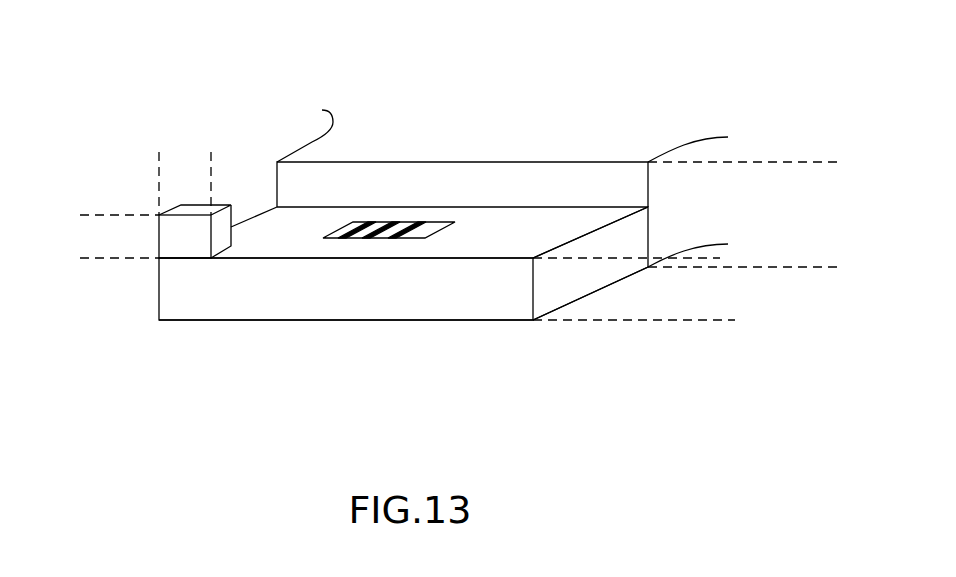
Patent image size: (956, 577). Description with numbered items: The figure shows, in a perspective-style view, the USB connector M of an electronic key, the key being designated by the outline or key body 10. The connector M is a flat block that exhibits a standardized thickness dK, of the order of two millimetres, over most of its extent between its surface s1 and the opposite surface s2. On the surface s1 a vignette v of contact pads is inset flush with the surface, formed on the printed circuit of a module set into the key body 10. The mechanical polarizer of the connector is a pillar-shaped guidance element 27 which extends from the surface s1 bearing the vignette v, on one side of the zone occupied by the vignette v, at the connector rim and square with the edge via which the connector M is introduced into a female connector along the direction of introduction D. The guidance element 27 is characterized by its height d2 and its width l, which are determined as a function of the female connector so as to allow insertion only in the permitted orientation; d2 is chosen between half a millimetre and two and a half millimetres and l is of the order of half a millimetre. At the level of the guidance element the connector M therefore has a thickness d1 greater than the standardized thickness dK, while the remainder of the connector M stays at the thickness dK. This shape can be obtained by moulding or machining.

The key body 10 is at (309, 143).
The pillar-shaped guidance element 27 is at (175, 242).
The surface bearing the vignette s1 is at (482, 213).
The opposite surface s2 is at (465, 320).
The vignette v is at (393, 232).
The connector M is at (525, 390).
The width of the guidance element l is at (159, 162).
The thickness d1 is at (813, 162).
The height of the guidance element d2 is at (92, 215).
The standardized thickness dK is at (717, 258).
The direction of introduction D is at (148, 407).